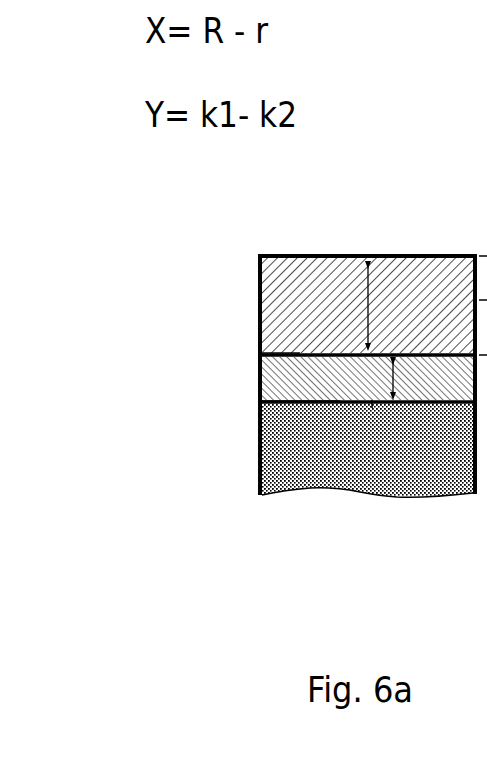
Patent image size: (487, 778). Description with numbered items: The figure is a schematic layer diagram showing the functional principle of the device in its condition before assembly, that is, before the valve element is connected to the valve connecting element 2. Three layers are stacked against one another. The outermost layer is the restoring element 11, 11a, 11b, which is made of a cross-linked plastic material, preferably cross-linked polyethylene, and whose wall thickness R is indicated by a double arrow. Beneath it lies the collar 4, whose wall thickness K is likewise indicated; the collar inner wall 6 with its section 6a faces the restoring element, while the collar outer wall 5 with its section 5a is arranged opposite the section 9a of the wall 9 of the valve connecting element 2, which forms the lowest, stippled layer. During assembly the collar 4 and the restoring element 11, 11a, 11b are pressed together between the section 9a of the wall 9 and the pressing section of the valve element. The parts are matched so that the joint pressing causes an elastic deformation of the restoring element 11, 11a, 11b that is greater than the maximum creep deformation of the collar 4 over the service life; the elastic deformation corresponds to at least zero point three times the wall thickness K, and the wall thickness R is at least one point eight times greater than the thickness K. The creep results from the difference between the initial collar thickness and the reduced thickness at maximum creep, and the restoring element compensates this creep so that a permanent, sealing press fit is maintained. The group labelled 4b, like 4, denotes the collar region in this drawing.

The valve connecting element 2 is at (420, 487).
The restoring element 11 is at (255, 281).
The restoring element 11a is at (255, 281).
The restoring element 11b is at (304, 290).
The wall thickness of the restoring element R is at (397, 283).
The collar 4 is at (265, 359).
The intermediate layer 4b is at (260, 376).
The collar inner wall 6 is at (221, 316).
The section of the collar inner wall 6a is at (276, 345).
The collar outer wall 5 is at (265, 447).
The section of the collar outer wall 5a is at (271, 406).
The wall of the valve connecting element 9 is at (281, 471).
The section of the wall 9a is at (334, 392).
The wall thickness of the collar K is at (372, 405).